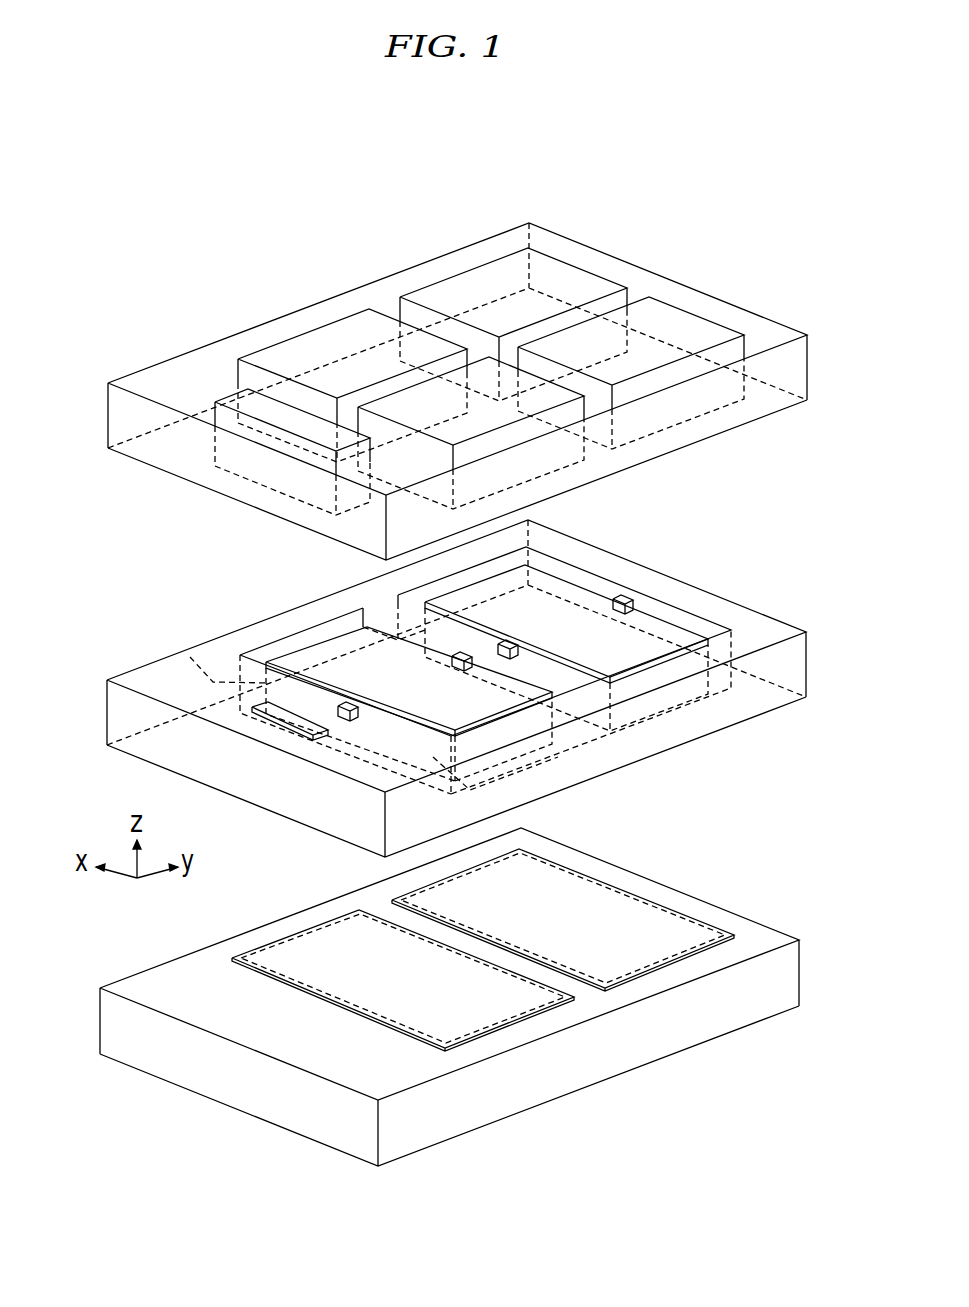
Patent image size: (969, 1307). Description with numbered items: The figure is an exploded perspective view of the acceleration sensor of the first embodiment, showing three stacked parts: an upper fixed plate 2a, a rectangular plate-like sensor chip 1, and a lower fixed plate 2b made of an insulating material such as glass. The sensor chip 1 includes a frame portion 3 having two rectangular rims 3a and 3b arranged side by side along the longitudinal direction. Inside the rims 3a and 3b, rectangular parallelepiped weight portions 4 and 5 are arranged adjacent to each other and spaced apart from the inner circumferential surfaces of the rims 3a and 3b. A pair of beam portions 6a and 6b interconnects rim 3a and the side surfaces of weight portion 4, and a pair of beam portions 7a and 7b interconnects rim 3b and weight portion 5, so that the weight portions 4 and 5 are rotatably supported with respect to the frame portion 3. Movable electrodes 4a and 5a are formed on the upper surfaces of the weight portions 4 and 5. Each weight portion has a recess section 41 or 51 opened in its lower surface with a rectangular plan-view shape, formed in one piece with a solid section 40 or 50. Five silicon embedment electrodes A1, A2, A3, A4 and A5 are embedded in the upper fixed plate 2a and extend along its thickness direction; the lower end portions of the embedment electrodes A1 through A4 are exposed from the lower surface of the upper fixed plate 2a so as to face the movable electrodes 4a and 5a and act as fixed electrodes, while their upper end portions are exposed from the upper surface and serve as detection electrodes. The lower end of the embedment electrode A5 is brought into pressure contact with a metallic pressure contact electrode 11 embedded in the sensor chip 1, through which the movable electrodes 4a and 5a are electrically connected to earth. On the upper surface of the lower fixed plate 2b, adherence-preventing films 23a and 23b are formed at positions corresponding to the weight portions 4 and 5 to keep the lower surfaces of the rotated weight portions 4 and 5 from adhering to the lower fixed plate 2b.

The sensor chip 1 is at (785, 618).
The upper fixed plate 2a is at (800, 370).
The lower fixed plate 2b is at (786, 980).
The frame portion 3 is at (743, 617).
The rim 3a is at (252, 653).
The rim 3b is at (690, 622).
The weight portion 4 is at (327, 647).
The movable electrode 4a is at (295, 657).
The weight portion 5 is at (572, 598).
The movable electrode 5a is at (542, 585).
The beam portion 6a is at (348, 692).
The beam portion 6b is at (452, 653).
The beam portion 7a is at (507, 637).
The beam portion 7b is at (622, 580).
The pressure contact electrode 11 is at (253, 727).
The adherence-preventing film 23a is at (289, 951).
The adherence-preventing film 23b is at (414, 892).
The solid section 40 is at (190, 657).
The recess section 41 is at (520, 802).
The solid section 50 is at (697, 710).
The recess section 51 is at (393, 610).
The embedment electrode A1 is at (437, 393).
The embedment electrode A2 is at (302, 348).
The embedment electrode A3 is at (677, 317).
The embedment electrode A4 is at (477, 263).
The embedment electrode A5 is at (235, 400).